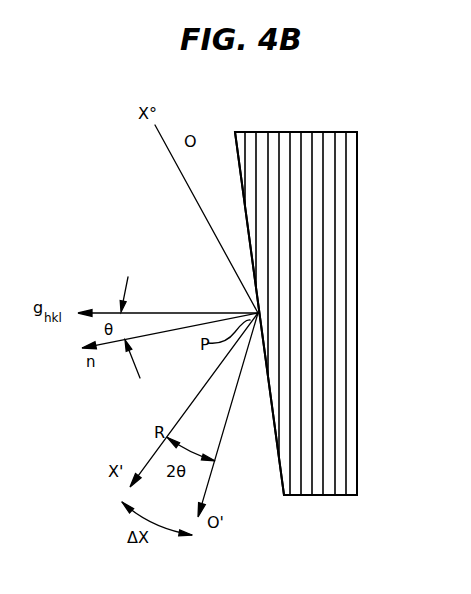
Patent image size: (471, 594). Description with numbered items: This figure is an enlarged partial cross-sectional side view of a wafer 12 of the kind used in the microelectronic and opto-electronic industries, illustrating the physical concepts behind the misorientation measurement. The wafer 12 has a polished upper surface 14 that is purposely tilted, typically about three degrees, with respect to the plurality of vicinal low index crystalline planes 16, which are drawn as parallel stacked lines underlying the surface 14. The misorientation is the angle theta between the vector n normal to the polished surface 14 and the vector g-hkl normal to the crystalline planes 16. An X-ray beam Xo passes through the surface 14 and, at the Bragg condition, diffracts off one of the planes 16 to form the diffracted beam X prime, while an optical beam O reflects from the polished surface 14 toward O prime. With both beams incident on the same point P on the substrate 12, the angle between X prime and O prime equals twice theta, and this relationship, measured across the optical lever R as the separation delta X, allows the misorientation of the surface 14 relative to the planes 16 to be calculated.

The wafer 12 is at (360, 475).
The polished surface 14 is at (236, 147).
The low index crystalline planes 16 is at (315, 130).